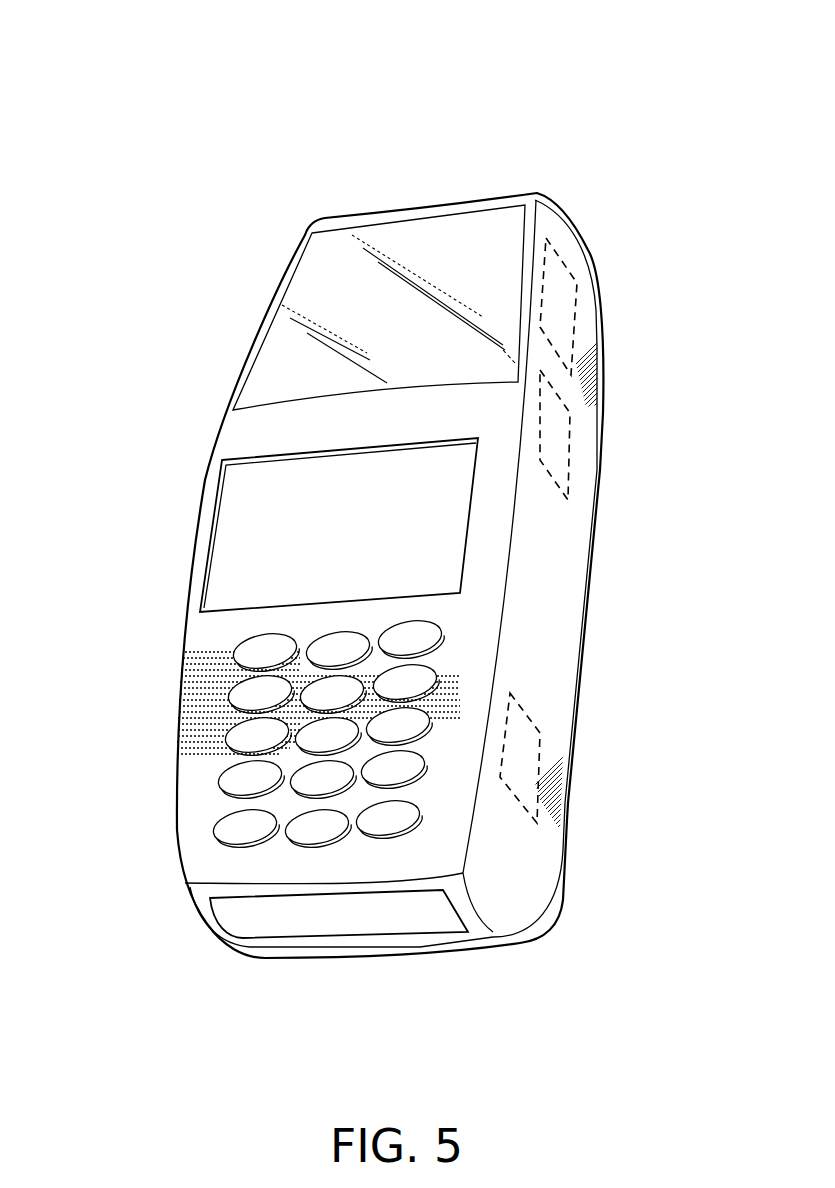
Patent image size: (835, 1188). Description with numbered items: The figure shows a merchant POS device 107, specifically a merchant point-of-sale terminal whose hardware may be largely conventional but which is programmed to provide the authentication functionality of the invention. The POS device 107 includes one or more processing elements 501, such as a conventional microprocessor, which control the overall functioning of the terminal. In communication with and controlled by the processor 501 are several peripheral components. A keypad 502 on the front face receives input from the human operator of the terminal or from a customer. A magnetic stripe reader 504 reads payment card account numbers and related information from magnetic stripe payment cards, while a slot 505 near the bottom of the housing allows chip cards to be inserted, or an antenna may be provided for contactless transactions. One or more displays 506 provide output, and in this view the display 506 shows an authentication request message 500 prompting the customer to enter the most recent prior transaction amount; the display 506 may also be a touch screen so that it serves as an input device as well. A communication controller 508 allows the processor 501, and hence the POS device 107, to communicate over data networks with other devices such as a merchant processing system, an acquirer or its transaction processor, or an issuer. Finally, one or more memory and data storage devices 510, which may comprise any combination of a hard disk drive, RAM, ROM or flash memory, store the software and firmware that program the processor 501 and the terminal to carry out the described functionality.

The merchant POS device 107 is at (230, 137).
The authentication request message 500 is at (217, 505).
The processing element 501 is at (537, 780).
The keypad 502 is at (243, 733).
The magnetic stripe reader 504 is at (493, 600).
The slot 505 is at (337, 925).
The display 506 is at (453, 480).
The communication controller 508 is at (570, 446).
The memory/data storage device 510 is at (570, 323).